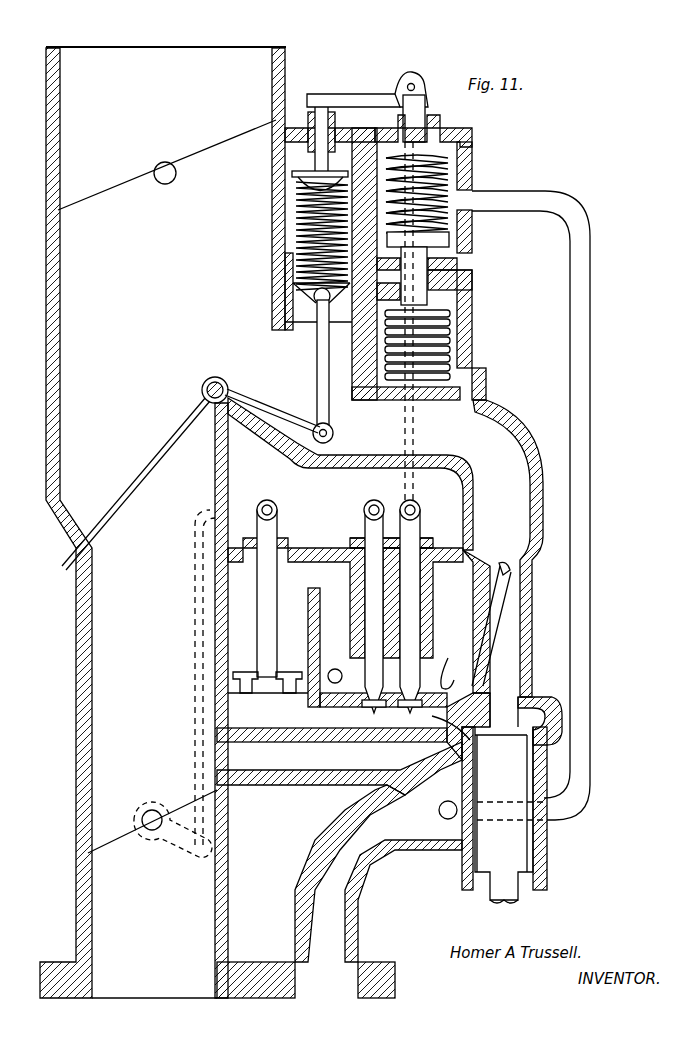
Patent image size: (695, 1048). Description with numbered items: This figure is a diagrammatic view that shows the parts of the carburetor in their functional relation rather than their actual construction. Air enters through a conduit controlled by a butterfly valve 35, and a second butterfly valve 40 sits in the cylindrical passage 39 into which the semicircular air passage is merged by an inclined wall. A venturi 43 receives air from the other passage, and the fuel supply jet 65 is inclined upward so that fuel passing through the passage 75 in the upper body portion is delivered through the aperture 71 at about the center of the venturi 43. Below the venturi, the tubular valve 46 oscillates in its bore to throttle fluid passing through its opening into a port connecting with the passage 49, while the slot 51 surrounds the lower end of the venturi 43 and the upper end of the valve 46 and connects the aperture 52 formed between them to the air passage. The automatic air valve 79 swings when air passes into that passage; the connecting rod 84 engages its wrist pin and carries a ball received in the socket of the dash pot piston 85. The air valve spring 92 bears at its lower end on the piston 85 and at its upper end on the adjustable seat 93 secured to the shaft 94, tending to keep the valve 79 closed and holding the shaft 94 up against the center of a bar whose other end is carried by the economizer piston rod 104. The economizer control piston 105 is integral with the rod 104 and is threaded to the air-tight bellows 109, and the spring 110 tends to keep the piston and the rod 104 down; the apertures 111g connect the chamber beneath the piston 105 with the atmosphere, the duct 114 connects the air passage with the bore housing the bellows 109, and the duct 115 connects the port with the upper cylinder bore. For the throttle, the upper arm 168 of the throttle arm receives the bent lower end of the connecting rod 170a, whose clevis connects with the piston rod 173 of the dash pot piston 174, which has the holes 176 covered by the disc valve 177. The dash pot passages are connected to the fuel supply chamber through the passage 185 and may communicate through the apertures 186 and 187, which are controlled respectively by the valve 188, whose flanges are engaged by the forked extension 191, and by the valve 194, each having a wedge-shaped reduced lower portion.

The butterfly valve 35 is at (108, 197).
The cylindrical passage 39 is at (163, 522).
The butterfly valve 40 is at (116, 820).
The venturi 43 is at (482, 680).
The tubular valve 46 is at (512, 800).
The passage 49 is at (339, 891).
The slot 51 is at (339, 768).
The aperture 52 is at (466, 723).
The fuel supply jet 65 is at (500, 562).
The aperture 71 is at (494, 626).
The passage 75 is at (440, 662).
The automatic air valve 79 is at (143, 488).
The connecting rod 84 is at (313, 360).
The dash pot piston 85 is at (292, 282).
The air valve spring 92 is at (295, 226).
The adjustable seat 93 is at (292, 178).
The shaft 94 is at (324, 112).
The economizer piston rod 104 is at (438, 108).
The economizer control piston 105 is at (455, 245).
The air-tight bellows 109 is at (450, 326).
The spring 110 is at (455, 181).
The apertures 111g is at (470, 266).
The duct 114 is at (465, 402).
The duct 115 is at (480, 208).
The upper arm 168 is at (172, 850).
The connecting rod 170a is at (192, 653).
The piston rod 173 is at (272, 531).
The dash pot piston 174 is at (250, 698).
The holes 176 is at (291, 700).
The disc valve 177 is at (290, 668).
The passage 185 is at (334, 668).
The aperture 186 is at (411, 711).
The aperture 187 is at (365, 711).
The valve 188 is at (415, 531).
The forked extension 191 is at (402, 433).
The valve 194 is at (368, 528).